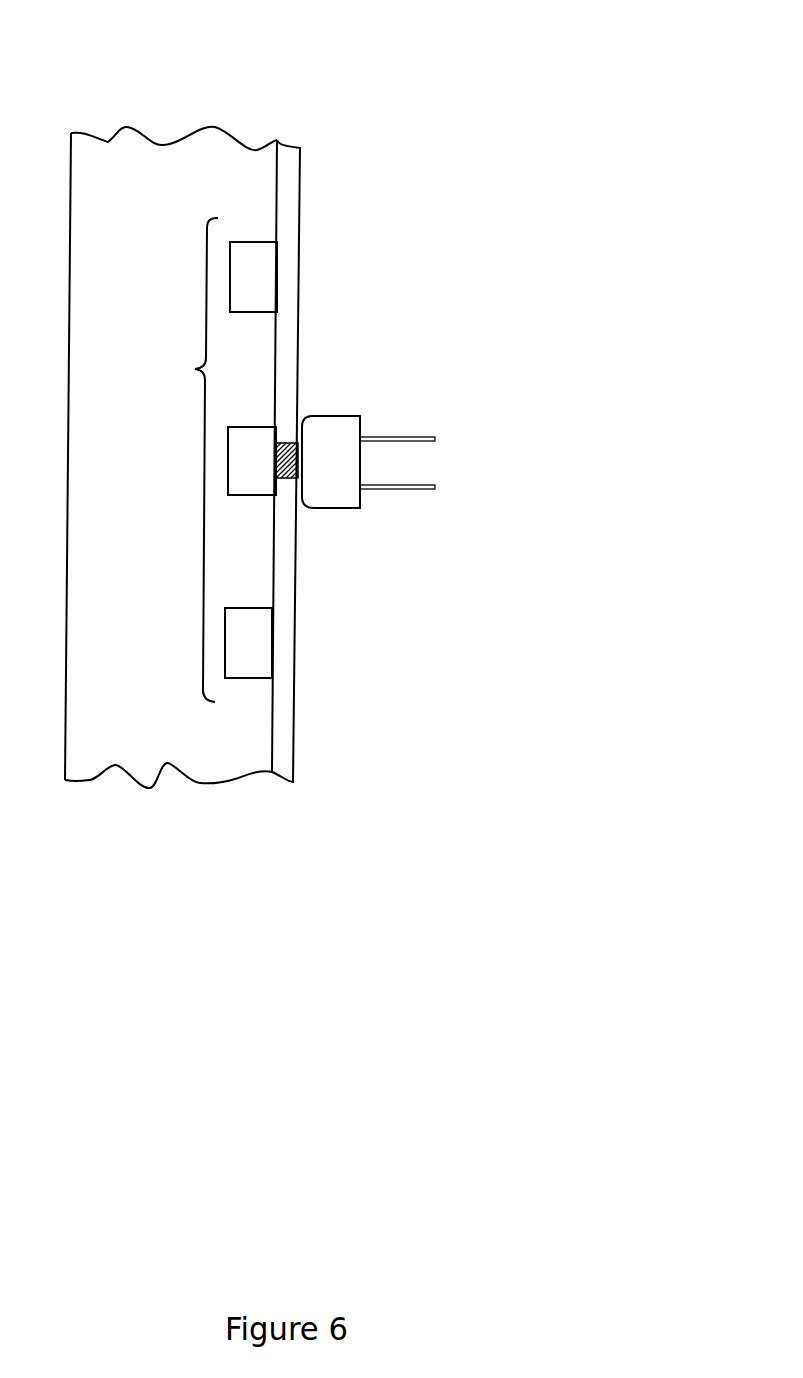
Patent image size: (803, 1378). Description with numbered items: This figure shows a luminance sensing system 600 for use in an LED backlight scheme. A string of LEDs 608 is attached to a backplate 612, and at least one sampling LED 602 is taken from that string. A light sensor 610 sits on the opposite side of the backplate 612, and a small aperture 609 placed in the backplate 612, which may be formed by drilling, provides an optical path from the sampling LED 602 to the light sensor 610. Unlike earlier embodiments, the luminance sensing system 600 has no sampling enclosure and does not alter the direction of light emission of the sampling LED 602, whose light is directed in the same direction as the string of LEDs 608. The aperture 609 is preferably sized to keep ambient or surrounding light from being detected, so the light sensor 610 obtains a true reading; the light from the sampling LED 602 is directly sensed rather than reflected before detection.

The luminance sensing system 600 is at (492, 159).
The sampling LED 602 is at (218, 480).
The string of LEDs 608 is at (198, 460).
The aperture 609 is at (283, 462).
The light sensor 610 is at (348, 404).
The backplate 612 is at (265, 192).